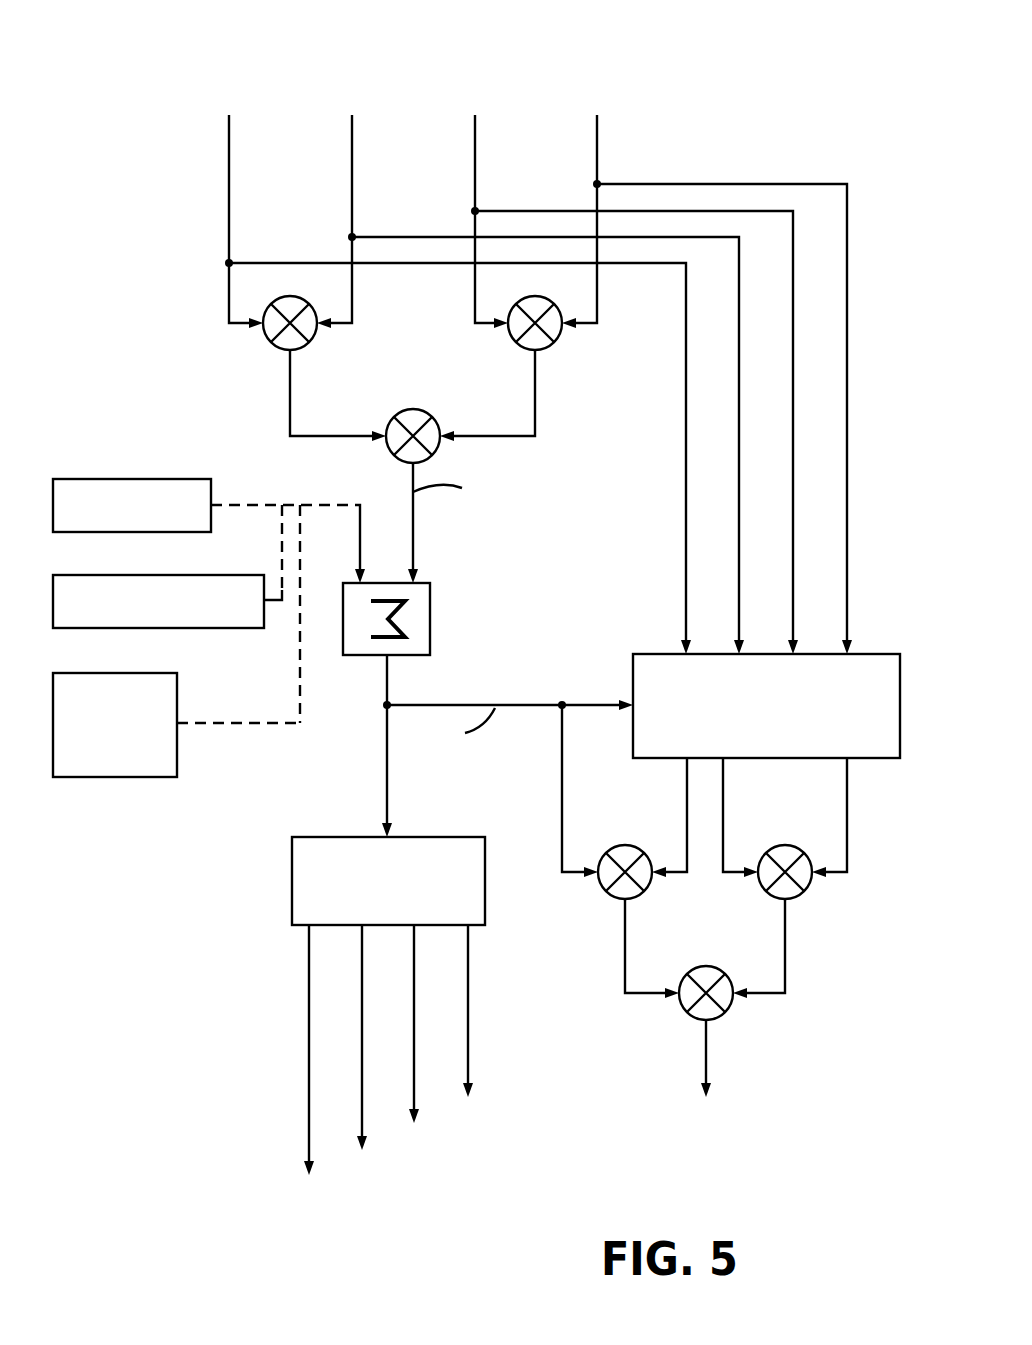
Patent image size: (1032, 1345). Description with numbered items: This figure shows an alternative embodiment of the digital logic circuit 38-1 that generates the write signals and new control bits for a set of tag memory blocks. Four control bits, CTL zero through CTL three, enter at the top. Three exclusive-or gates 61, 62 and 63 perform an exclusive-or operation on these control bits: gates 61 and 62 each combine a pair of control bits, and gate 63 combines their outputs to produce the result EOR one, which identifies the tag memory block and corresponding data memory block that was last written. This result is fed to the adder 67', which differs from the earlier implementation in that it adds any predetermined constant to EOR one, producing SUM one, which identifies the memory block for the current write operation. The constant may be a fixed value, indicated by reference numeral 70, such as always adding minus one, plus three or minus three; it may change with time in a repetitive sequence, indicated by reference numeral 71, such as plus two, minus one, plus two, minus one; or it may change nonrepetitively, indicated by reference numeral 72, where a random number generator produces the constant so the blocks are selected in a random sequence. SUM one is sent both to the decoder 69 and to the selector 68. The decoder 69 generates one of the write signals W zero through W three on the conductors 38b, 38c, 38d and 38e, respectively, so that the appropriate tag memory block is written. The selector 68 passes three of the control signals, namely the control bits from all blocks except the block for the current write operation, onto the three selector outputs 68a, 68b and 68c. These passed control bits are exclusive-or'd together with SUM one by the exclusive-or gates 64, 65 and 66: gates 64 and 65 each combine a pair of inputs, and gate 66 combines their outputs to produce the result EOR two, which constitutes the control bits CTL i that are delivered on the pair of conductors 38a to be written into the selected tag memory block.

The digital logic circuit 38-1 is at (682, 70).
The exclusive-or gate 61 is at (275, 350).
The exclusive-or gate 62 is at (553, 345).
The exclusive-or gate 63 is at (418, 408).
The exclusive-or gate 64 is at (615, 892).
The exclusive-or gate 65 is at (808, 888).
The exclusive-or gate 66 is at (692, 1017).
The adder 67' is at (423, 619).
The selector circuit 68 is at (643, 654).
The selector output 68a is at (687, 803).
The selector output 68b is at (723, 805).
The selector output 68c is at (847, 805).
The decoder circuit 69 is at (333, 840).
The fixed constant (−1 or +3 or −3) 70 is at (145, 479).
The repetitive constant sequence (+2, −1, +2, −1) 71 is at (215, 628).
The random number generator 72 is at (129, 777).
The pair of conductors 38a is at (707, 1045).
The conductor 38b is at (309, 1040).
The conductor 38c is at (362, 985).
The conductor 38d is at (414, 1027).
The conductor 38e is at (468, 980).